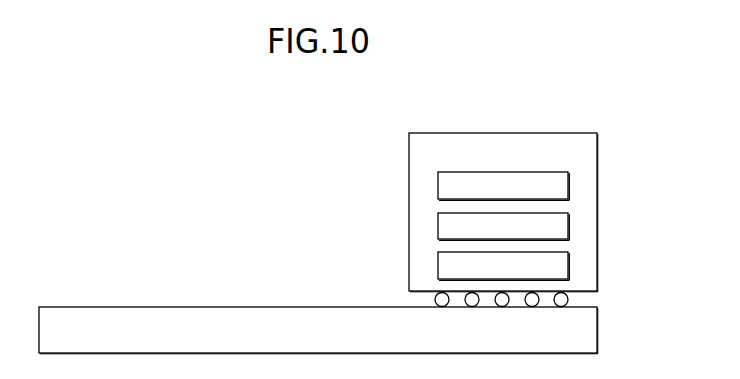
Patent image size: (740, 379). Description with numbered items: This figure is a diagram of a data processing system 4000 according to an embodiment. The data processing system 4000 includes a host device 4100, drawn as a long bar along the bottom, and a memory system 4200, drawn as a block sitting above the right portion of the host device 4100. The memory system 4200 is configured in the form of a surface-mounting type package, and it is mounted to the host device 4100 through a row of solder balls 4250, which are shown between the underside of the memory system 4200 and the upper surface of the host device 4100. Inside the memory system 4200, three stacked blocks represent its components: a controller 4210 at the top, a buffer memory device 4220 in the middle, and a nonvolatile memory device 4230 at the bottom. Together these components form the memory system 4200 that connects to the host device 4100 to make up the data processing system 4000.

The data processing system 4000 is at (113, 106).
The host device 4100 is at (318, 330).
The memory system 4200 is at (503, 212).
The controller 4210 is at (503, 186).
The buffer memory device 4220 is at (503, 226).
The nonvolatile memory device 4230 is at (503, 266).
The solder balls 4250 is at (577, 300).